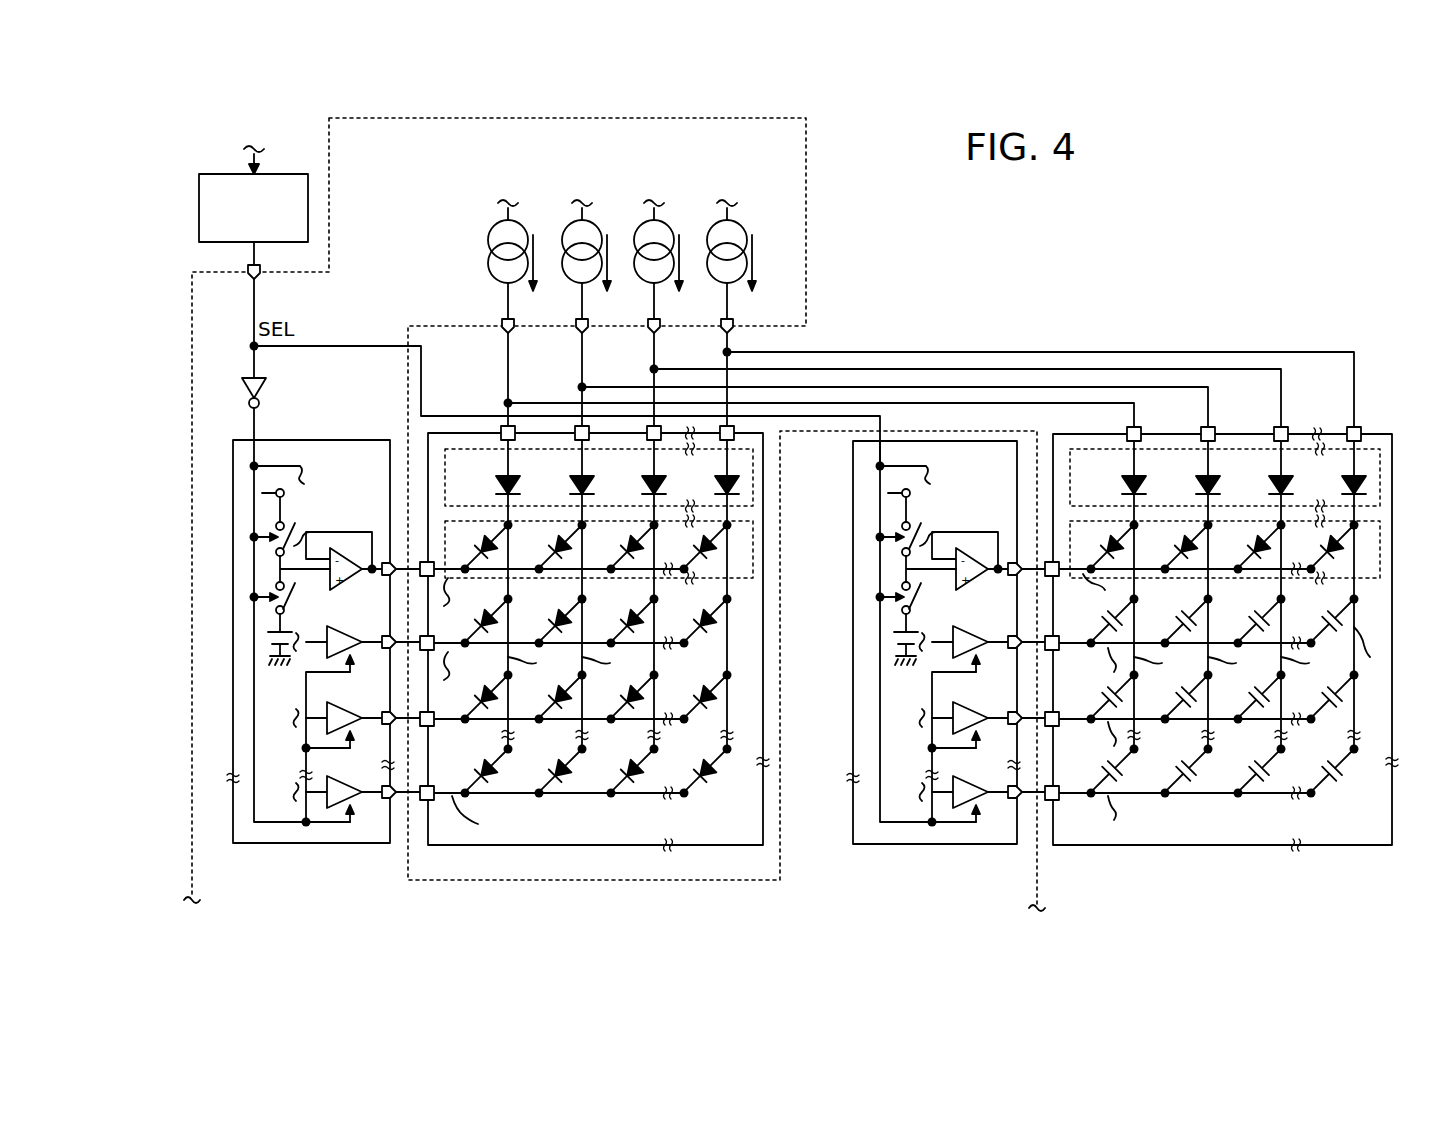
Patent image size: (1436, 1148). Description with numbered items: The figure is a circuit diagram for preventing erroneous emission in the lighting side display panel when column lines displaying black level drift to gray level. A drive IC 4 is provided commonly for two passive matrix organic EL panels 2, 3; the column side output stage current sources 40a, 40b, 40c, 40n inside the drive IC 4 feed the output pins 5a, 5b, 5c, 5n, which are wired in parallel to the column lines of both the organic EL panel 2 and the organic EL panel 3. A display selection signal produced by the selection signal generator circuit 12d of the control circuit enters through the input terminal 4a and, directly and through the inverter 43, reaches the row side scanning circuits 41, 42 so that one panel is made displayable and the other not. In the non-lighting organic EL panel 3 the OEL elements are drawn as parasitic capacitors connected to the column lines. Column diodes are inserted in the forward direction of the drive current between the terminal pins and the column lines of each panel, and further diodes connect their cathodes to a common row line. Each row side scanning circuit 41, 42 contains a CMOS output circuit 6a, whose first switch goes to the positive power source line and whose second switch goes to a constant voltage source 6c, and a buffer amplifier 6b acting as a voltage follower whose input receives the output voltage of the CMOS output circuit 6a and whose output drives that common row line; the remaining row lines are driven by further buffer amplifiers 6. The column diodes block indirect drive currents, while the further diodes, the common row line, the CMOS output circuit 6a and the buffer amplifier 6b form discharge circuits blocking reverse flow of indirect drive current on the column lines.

The selection signal generator circuit 12d is at (298, 174).
The drive IC 4 is at (644, 276).
The input terminal 4a is at (250, 286).
The inverter 43 is at (245, 398).
The row side scanning circuit 41 is at (374, 440).
The row side scanning circuit 42 is at (956, 454).
The buffer amplifier 6 is at (343, 641).
The CMOS output circuit 6a is at (262, 580).
The buffer amplifier 6b is at (346, 548).
The constant voltage source 6c is at (268, 638).
The column side output stage current source 40a is at (489, 269).
The column side output stage current source 40b is at (581, 272).
The column side output stage current source 40c is at (652, 273).
The column side output stage current source 40n is at (727, 272).
The output pin 5a is at (514, 335).
The output pin 5b is at (588, 334).
The output pin 5c is at (698, 351).
The output pin 5n is at (733, 334).
The organic EL panel 2 is at (752, 583).
The organic EL panel 3 is at (1392, 434).